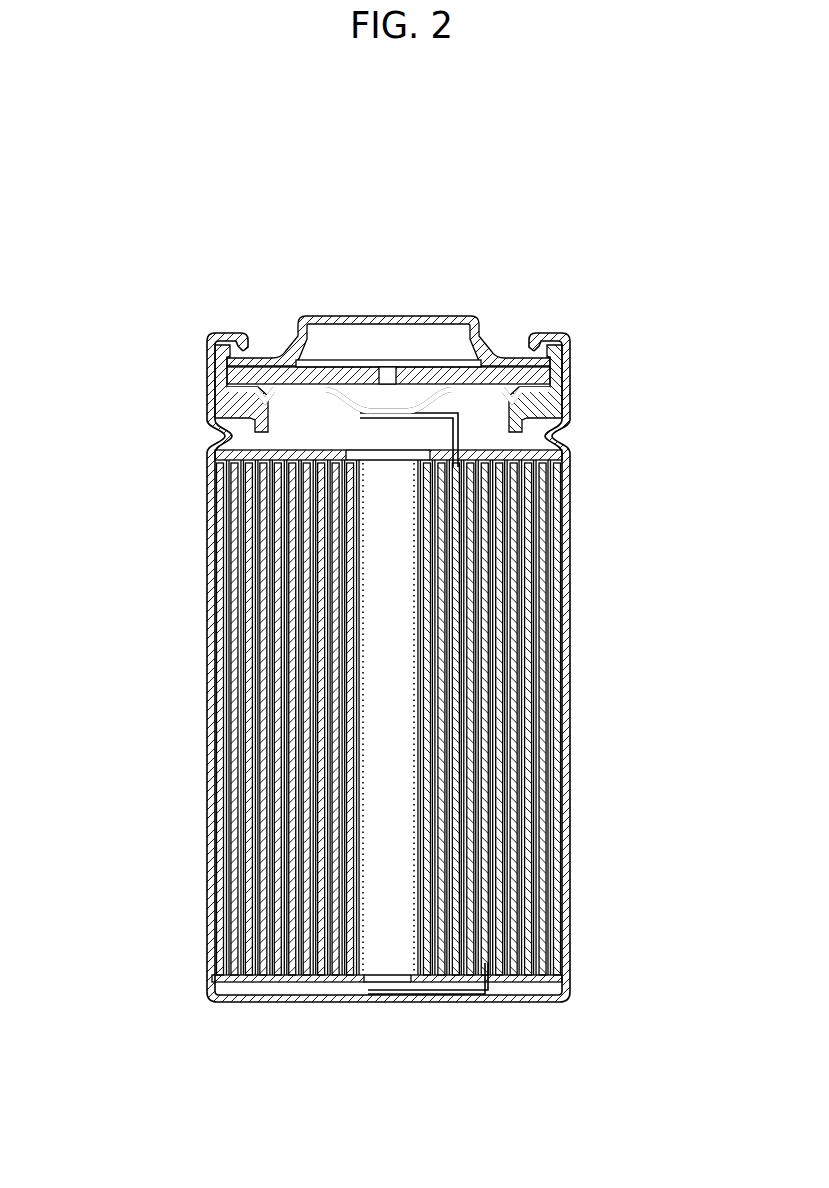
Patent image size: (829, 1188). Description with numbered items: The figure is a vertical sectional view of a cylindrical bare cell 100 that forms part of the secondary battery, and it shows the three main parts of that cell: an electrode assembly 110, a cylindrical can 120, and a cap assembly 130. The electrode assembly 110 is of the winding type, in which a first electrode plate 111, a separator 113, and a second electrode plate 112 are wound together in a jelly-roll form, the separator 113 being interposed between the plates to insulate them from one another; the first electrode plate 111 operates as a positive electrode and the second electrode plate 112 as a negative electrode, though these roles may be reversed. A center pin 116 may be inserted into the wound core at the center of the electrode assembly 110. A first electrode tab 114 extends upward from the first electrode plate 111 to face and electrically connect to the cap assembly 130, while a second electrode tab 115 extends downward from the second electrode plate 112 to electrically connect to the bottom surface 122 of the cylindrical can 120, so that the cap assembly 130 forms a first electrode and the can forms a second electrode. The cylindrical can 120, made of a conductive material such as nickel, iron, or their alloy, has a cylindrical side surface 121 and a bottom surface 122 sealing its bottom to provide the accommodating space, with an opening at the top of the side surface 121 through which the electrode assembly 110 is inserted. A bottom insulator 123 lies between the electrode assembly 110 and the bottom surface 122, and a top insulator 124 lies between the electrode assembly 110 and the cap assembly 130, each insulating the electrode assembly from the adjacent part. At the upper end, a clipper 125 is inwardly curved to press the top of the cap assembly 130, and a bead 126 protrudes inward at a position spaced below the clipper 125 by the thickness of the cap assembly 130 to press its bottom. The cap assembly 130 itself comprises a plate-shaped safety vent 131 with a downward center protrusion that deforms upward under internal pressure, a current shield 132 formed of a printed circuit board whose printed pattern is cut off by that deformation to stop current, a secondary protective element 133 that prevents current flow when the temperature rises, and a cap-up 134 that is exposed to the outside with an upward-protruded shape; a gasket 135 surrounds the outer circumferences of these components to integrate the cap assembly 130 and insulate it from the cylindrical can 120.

The cylindrical bare cell 100 is at (138, 203).
The electrode assembly 110 is at (697, 436).
The first electrode plate 111 is at (562, 502).
The second electrode plate 112 is at (550, 553).
The separator 113 is at (547, 583).
The first electrode tab 114 is at (458, 420).
The second electrode tab 115 is at (488, 990).
The center pin 116 is at (412, 817).
The cylindrical can 120 is at (93, 347).
The side surface 121 is at (207, 500).
The bottom surface 122 is at (233, 1002).
The bottom insulator 123 is at (317, 982).
The top insulator 124 is at (322, 458).
The clipper 125 is at (207, 347).
The bead 126 is at (220, 437).
The cap assembly 130 is at (480, 237).
The safety vent 131 is at (360, 384).
The current shield 132 is at (412, 383).
The secondary protective element 133 is at (497, 358).
The cap-up 134 is at (297, 338).
The gasket 135 is at (553, 345).